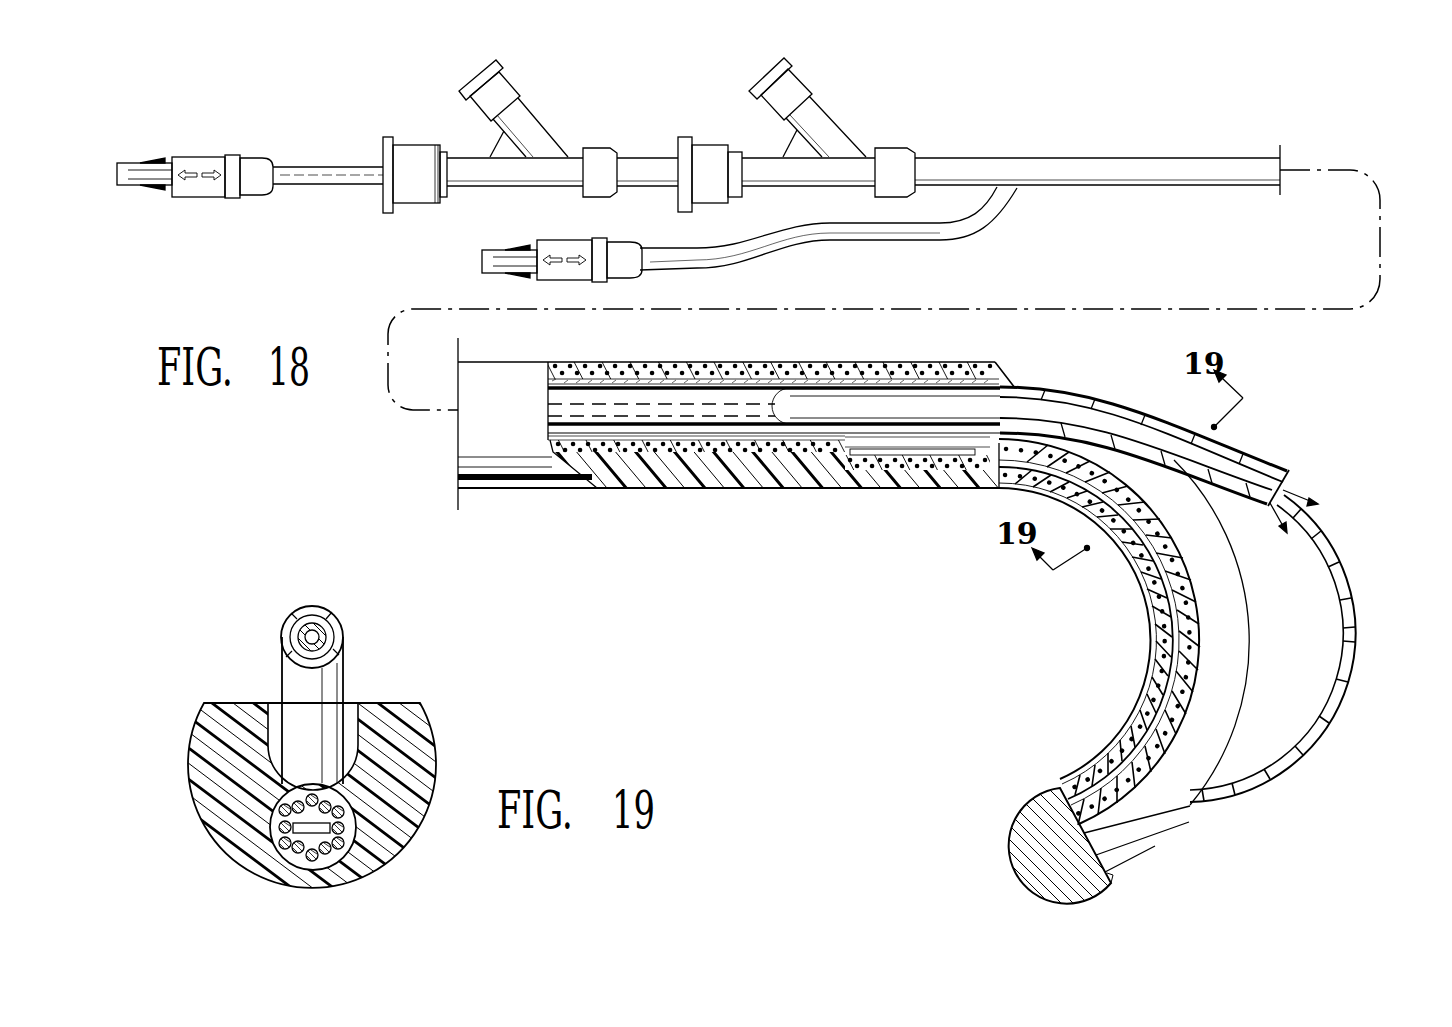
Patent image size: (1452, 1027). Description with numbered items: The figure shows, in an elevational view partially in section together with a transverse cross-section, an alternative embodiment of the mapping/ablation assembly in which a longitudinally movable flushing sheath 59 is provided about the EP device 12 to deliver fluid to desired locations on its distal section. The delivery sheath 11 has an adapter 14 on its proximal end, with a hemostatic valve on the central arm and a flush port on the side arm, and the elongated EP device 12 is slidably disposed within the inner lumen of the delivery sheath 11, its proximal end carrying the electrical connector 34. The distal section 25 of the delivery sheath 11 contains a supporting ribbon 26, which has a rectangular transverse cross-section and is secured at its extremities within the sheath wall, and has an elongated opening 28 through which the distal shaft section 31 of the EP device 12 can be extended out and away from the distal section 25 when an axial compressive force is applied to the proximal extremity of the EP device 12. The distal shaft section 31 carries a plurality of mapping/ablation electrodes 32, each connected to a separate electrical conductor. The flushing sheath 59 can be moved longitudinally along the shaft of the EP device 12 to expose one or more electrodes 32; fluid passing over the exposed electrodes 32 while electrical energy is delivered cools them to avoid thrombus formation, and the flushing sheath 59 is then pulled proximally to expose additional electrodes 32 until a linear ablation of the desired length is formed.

In FIG. 18, the delivery sheath 11 is at (1162, 157).
In FIG. 19, the delivery sheath 11 is at (797, 488).
In FIG. 18, the EP device 12 is at (337, 182).
In FIG. 19, the EP device 12 is at (1050, 404).
In FIG. 18, the adapter 14 is at (764, 153).
In FIG. 19, the distal section 25 is at (1150, 620).
In FIG. 19, the supporting ribbon 26 is at (1197, 663).
In FIG. 19, the elongated opening 28 is at (1223, 588).
In FIG. 19, the distal shaft section 31 is at (1363, 625).
In FIG. 19, the mapping/ablation electrodes 32 is at (1263, 778).
In FIG. 18, the electrical connector 34 is at (234, 155).
In FIG. 19, the flushing sheath 59 is at (1267, 457).